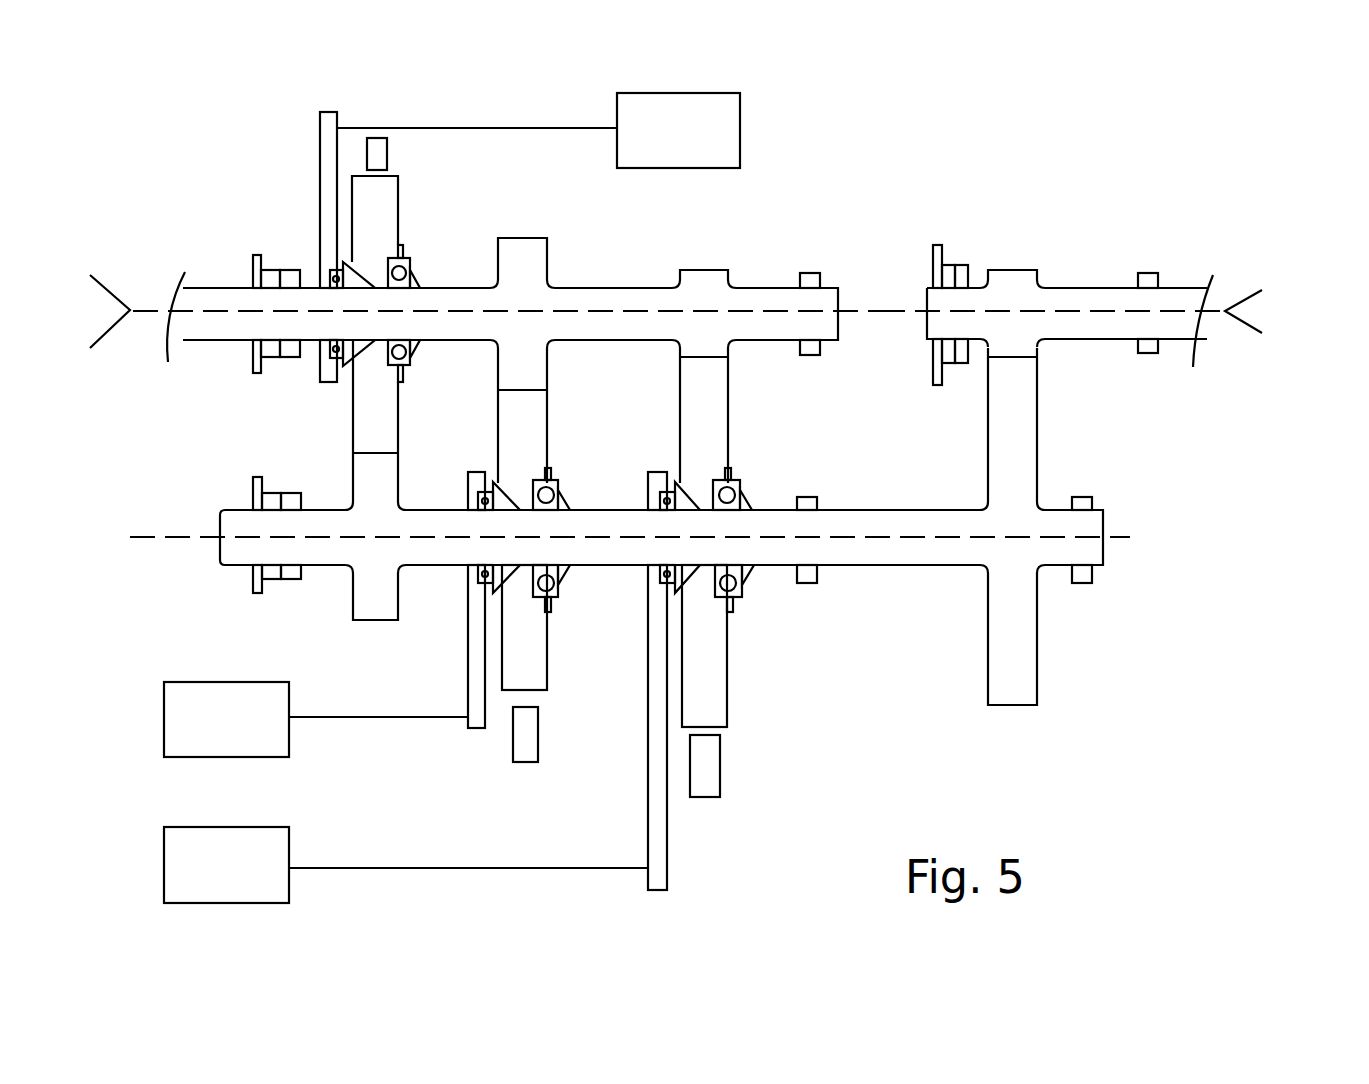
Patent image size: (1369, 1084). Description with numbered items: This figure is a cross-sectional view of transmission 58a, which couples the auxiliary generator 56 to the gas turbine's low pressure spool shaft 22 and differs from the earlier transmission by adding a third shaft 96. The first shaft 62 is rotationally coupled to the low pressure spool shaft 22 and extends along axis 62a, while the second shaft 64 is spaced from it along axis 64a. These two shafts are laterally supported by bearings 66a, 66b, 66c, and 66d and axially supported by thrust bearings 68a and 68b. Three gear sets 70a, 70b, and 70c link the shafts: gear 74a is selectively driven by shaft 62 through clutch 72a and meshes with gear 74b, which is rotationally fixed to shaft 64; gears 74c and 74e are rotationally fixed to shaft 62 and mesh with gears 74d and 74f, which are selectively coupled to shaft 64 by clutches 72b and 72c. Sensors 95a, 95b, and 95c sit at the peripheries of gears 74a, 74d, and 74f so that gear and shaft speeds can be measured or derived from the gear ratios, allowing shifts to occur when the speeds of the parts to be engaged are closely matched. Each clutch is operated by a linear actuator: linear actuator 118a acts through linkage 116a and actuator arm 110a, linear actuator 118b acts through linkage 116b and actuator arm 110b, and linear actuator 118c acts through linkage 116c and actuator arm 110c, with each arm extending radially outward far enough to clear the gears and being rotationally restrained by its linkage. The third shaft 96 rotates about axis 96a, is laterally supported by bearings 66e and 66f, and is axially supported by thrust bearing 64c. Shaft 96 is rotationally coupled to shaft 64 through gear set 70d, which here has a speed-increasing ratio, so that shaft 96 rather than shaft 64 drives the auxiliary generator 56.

The low pressure spool shaft 22 is at (85, 306).
The auxiliary generator 56 is at (1293, 312).
The transmission 58a is at (813, 193).
The first shaft 62 is at (506, 305).
The axis 62a is at (230, 312).
The second shaft 64 is at (630, 576).
The axis 64a is at (262, 537).
The thrust bearing 64c is at (935, 245).
The bearing 66a is at (293, 270).
The bearing 66b is at (808, 273).
The bearing 66c is at (288, 493).
The bearing 66d is at (810, 497).
The bearing 66e is at (960, 265).
The bearing 66f is at (1148, 353).
The thrust bearing 68a is at (263, 262).
The thrust bearing 68b is at (272, 493).
The gear set 70a is at (406, 220).
The gear set 70b is at (561, 244).
The gear set 70c is at (734, 261).
The gear set 70d is at (1016, 231).
The clutch 72a is at (316, 371).
The clutch 72b is at (461, 577).
The clutch 72c is at (643, 584).
The gear 74a is at (398, 176).
The gear 74b is at (398, 465).
The gear 74c is at (525, 238).
The gear 74d is at (548, 417).
The gear 74e is at (705, 270).
The gear 74f is at (730, 402).
The sensor 95a is at (387, 150).
The sensor 95b is at (540, 728).
The sensor 95c is at (722, 750).
The third shaft 96 is at (1052, 273).
The axis 96a is at (1118, 310).
The actuator arm 110a is at (320, 140).
The actuator arm 110b is at (467, 655).
The actuator arm 110c is at (648, 810).
The linkage 116a is at (516, 128).
The linkage 116b is at (373, 720).
The linkage 116c is at (412, 870).
The linear actuator 118a is at (678, 130).
The linear actuator 118b is at (226, 719).
The linear actuator 118c is at (226, 865).